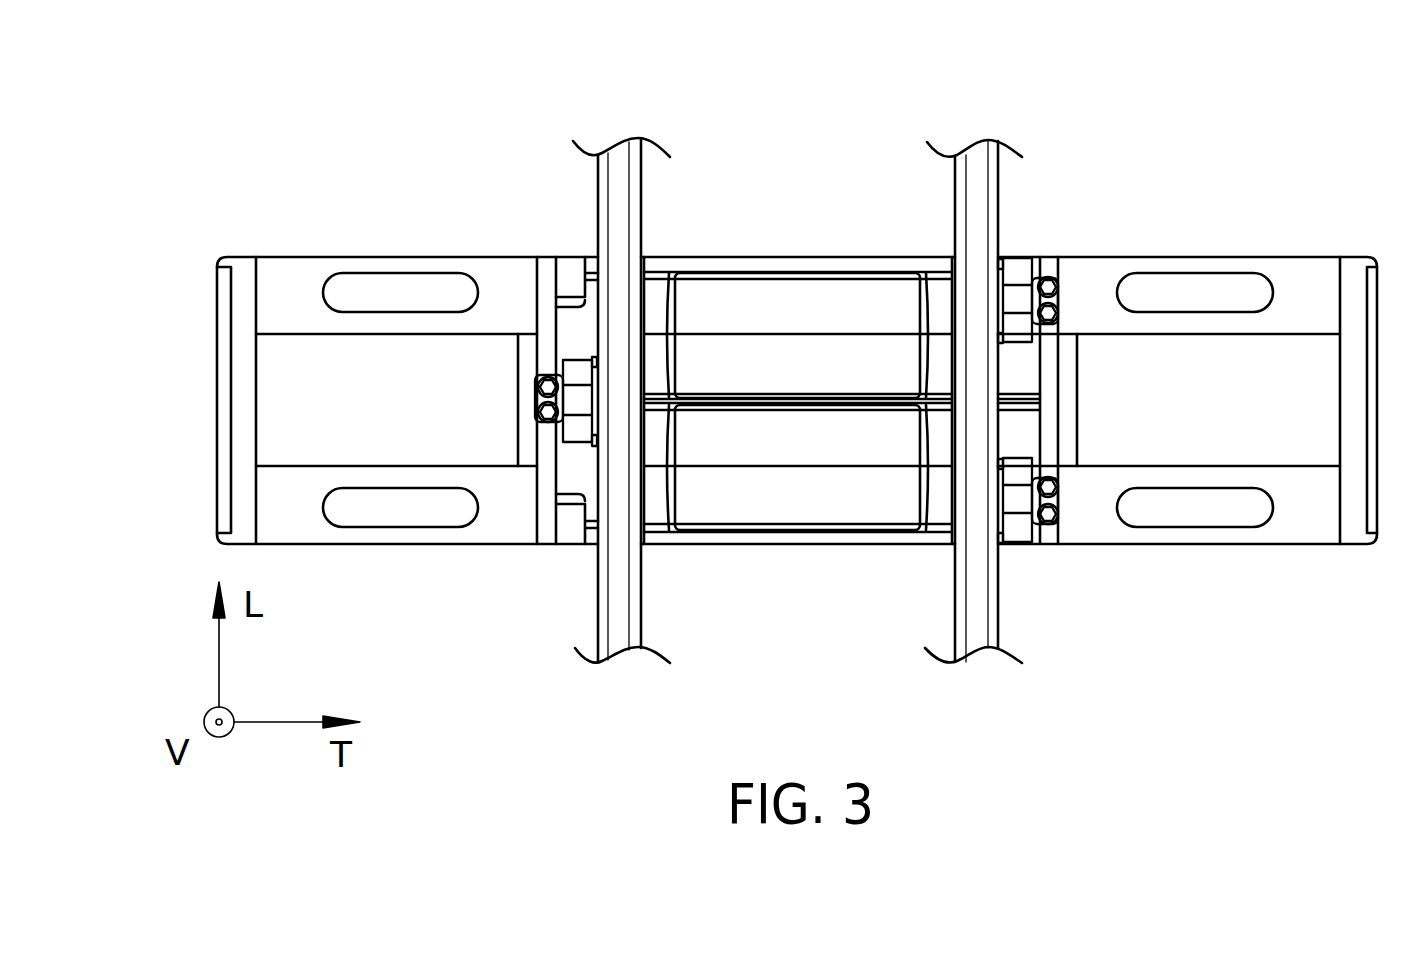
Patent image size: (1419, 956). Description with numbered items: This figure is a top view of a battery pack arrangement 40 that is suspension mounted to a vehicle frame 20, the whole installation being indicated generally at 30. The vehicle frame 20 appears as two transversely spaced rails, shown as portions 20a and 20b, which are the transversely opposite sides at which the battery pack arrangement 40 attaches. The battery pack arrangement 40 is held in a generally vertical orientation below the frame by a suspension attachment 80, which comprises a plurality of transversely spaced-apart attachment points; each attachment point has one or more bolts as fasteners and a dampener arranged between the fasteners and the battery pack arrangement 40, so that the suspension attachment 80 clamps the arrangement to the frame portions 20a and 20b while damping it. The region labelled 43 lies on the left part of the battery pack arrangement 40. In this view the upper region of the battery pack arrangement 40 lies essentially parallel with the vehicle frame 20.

The mounting assembly 30 is at (228, 123).
The battery pack arrangement 40 is at (352, 152).
The mounting plate 43 is at (323, 402).
The vehicle frame 20 is at (799, 400).
The portion of the vehicle frame 20a is at (620, 202).
The portion of the vehicle frame 20b is at (973, 202).
The suspension attachment 80 is at (1018, 300).